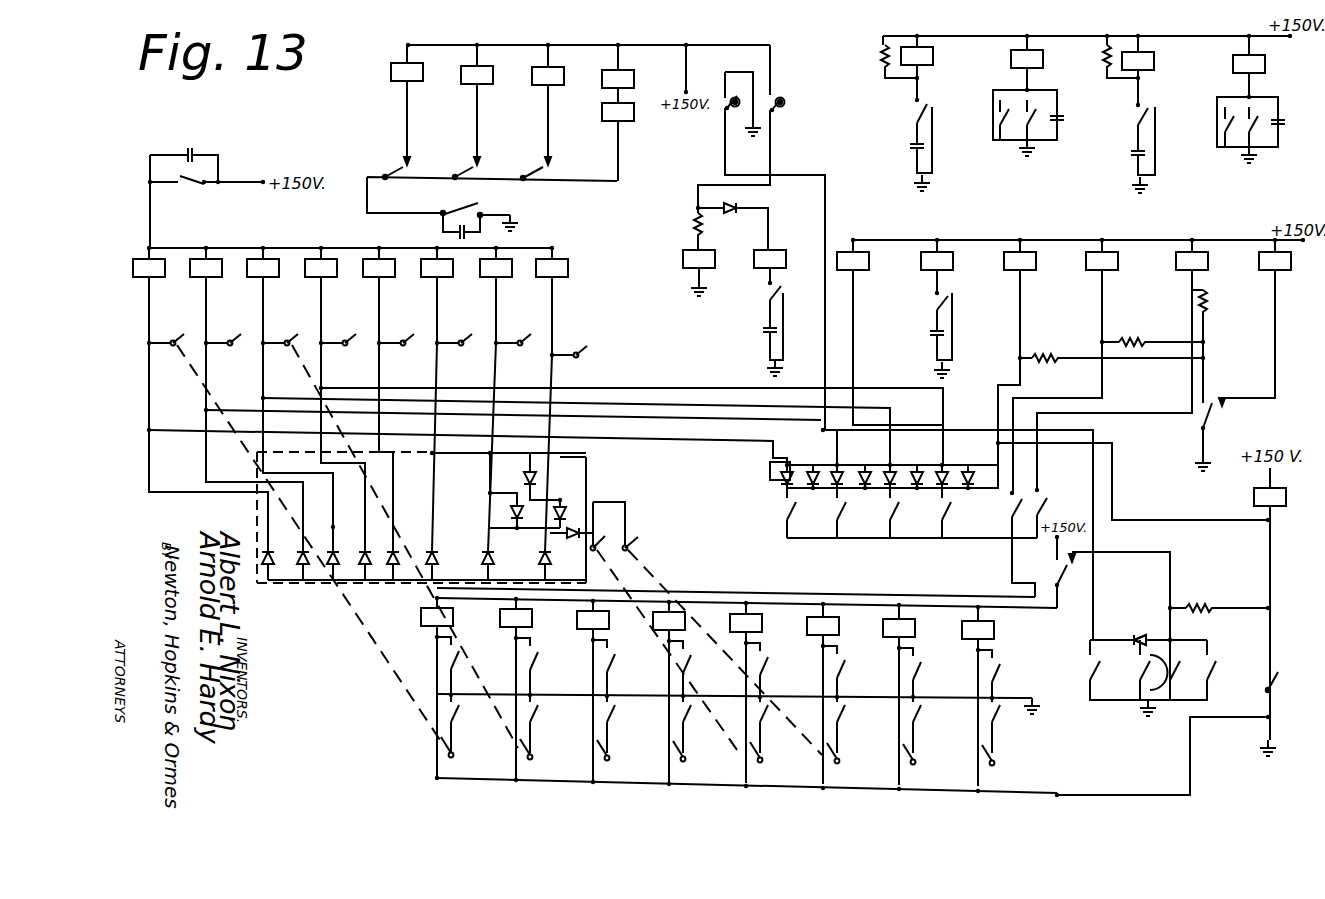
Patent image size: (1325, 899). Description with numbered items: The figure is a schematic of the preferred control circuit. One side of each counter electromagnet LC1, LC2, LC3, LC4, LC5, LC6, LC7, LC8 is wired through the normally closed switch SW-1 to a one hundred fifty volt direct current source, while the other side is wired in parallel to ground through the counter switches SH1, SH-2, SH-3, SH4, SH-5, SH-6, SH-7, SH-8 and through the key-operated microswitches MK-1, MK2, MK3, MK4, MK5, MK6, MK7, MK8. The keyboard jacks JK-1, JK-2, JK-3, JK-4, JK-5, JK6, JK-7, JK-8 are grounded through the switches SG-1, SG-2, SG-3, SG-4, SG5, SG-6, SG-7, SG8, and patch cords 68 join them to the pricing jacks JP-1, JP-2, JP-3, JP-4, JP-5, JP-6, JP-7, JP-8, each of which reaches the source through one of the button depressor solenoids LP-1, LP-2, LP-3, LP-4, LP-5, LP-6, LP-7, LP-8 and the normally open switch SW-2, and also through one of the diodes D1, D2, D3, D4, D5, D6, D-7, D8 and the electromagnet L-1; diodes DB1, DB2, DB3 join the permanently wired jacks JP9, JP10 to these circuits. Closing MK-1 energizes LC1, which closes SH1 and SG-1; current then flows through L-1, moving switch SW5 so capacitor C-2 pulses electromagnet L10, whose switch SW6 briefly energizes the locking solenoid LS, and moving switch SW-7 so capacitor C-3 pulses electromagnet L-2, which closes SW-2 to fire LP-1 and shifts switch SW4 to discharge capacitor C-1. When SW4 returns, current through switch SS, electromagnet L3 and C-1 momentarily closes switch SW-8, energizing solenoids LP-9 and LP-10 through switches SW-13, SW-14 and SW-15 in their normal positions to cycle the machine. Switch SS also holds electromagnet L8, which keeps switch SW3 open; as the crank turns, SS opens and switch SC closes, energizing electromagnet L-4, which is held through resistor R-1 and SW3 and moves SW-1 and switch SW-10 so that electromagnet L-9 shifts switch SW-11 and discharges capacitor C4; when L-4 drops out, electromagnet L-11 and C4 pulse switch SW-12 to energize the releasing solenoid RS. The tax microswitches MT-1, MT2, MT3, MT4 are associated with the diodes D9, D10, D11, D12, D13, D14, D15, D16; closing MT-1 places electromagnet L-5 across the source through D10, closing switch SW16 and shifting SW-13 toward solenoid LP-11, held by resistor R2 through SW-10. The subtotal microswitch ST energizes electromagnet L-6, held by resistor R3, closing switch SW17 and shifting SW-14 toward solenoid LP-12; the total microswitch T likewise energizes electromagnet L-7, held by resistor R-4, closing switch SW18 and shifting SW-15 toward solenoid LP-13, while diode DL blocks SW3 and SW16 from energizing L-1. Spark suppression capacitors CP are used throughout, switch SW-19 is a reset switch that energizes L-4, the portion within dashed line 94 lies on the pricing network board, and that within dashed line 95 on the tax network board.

The solenoid LP-1 is at (160, 250).
The solenoid LP-2 is at (189, 280).
The solenoid LP-3 is at (254, 251).
The solenoid LP-4 is at (304, 281).
The solenoid LP-5 is at (362, 281).
The solenoid LP-6 is at (419, 281).
The solenoid LP-7 is at (479, 281).
The solenoid LP-8 is at (536, 281).
The solenoid LP-9 is at (602, 64).
The solenoid LP-10 is at (599, 101).
The solenoid LP-11 is at (531, 62).
The solenoid LP-12 is at (460, 85).
The solenoid LP-13 is at (388, 61).
The normally open switch SW-2 is at (204, 192).
The normally open switch SW-8 is at (479, 199).
The switch SW-13 is at (565, 160).
The switch SW-14 is at (445, 157).
The switch SW-15 is at (372, 160).
The spark suppression capacitor CP is at (746, 169).
The jack JP-1 is at (166, 331).
The jack JP-2 is at (224, 331).
The jack JP-3 is at (282, 331).
The jack JP-4 is at (339, 331).
The jack JP-5 is at (397, 331).
The jack JP-6 is at (457, 331).
The jack JP-7 is at (515, 331).
The jack JP-8 is at (580, 344).
The jack JP9 is at (600, 530).
The jack JP10 is at (644, 541).
The switch SC is at (715, 87).
The switch SS is at (787, 89).
The electromagnet L8 is at (678, 242).
The electromagnet L3 is at (757, 248).
The switch SW4 is at (749, 291).
The capacitor C-1 is at (749, 323).
The electromagnet L10 is at (917, 67).
The switch SW5 is at (899, 106).
The capacitor C-2 is at (898, 138).
The locking solenoid LS is at (1009, 54).
The switch SW6 is at (1006, 135).
The electromagnet L-11 is at (1150, 54).
The switch SW-11 is at (1170, 99).
The capacitor C4 is at (1116, 160).
The releasing solenoid RS is at (1265, 60).
The switch SW-12 is at (1224, 139).
The electromagnet L-1 is at (861, 271).
The electromagnet L-2 is at (916, 259).
The switch SW-7 is at (917, 301).
The capacitor C-3 is at (916, 329).
The electromagnet L-5 is at (1000, 259).
The electromagnet L-6 is at (1082, 259).
The electromagnet L-7 is at (1171, 259).
The electromagnet L-9 is at (1256, 259).
The resistor R2 is at (1056, 349).
The resistor R3 is at (1139, 333).
The resistor R-4 is at (1221, 301).
The switch SW-10 is at (1239, 413).
The electromagnet L-4 is at (1253, 497).
The dashed line 95 is at (773, 452).
The dashed line 94 is at (590, 470).
The diode D1 is at (282, 578).
The diode D2 is at (292, 545).
The diode D3 is at (343, 545).
The diode D4 is at (374, 545).
The diode D5 is at (401, 578).
The diode D6 is at (447, 567).
The diode D-7 is at (506, 565).
The diode D8 is at (558, 553).
The diode D9 is at (767, 473).
The diode D10 is at (810, 464).
The diode D11 is at (852, 464).
The diode D12 is at (865, 491).
The diode D13 is at (905, 464).
The diode D14 is at (918, 491).
The diode D15 is at (959, 464).
The diode D16 is at (984, 491).
The diode DB1 is at (510, 512).
The diode DB2 is at (514, 470).
The diode DB3 is at (568, 498).
The microswitch MT-1 is at (772, 513).
The microswitch MT2 is at (821, 513).
The microswitch MT3 is at (870, 516).
The microswitch MT4 is at (923, 516).
The microswitch ST is at (998, 515).
The microswitch T is at (1047, 495).
The normally closed switch SW-1 is at (1043, 569).
The patch cord 68 is at (368, 627).
The electromagnet LC1 is at (418, 624).
The electromagnet LC2 is at (498, 616).
The electromagnet LC3 is at (574, 618).
The electromagnet LC4 is at (649, 624).
The electromagnet LC5 is at (763, 623).
The electromagnet LC6 is at (802, 634).
The electromagnet LC7 is at (881, 625).
The electromagnet LC8 is at (957, 627).
The switch SH1 is at (483, 648).
The switch SH-2 is at (553, 648).
The switch SH-3 is at (629, 651).
The switch SH4 is at (705, 668).
The switch SH-5 is at (786, 671).
The switch SH-6 is at (862, 657).
The switch SH-7 is at (938, 659).
The switch SH-8 is at (1017, 680).
The switch SG-1 is at (473, 710).
The switch SG-2 is at (556, 712).
The switch SG-3 is at (632, 709).
The switch SG-4 is at (680, 720).
The switch SG5 is at (788, 712).
The switch SG-6 is at (860, 713).
The switch SG-7 is at (937, 715).
The switch SG8 is at (1017, 726).
The microswitch MK-1 is at (443, 745).
The microswitch MK2 is at (497, 746).
The microswitch MK3 is at (575, 748).
The microswitch MK4 is at (651, 749).
The microswitch MK5 is at (729, 750).
The microswitch MK6 is at (808, 752).
The microswitch MK7 is at (883, 752).
The microswitch MK8 is at (960, 752).
The jack JK-1 is at (467, 765).
The jack JK-2 is at (546, 767).
The jack JK-3 is at (623, 768).
The jack JK-4 is at (698, 769).
The jack JK-5 is at (776, 770).
The jack JK6 is at (852, 772).
The jack JK-7 is at (931, 773).
The jack JK-8 is at (1011, 774).
The switch SW18 is at (1071, 658).
The switch SW17 is at (1126, 685).
The diode DL is at (1132, 632).
The normally open switch SW16 is at (1196, 651).
The normally closed switch SW3 is at (1232, 659).
The reset switch SW-19 is at (1245, 677).
The resistor R-1 is at (1204, 599).